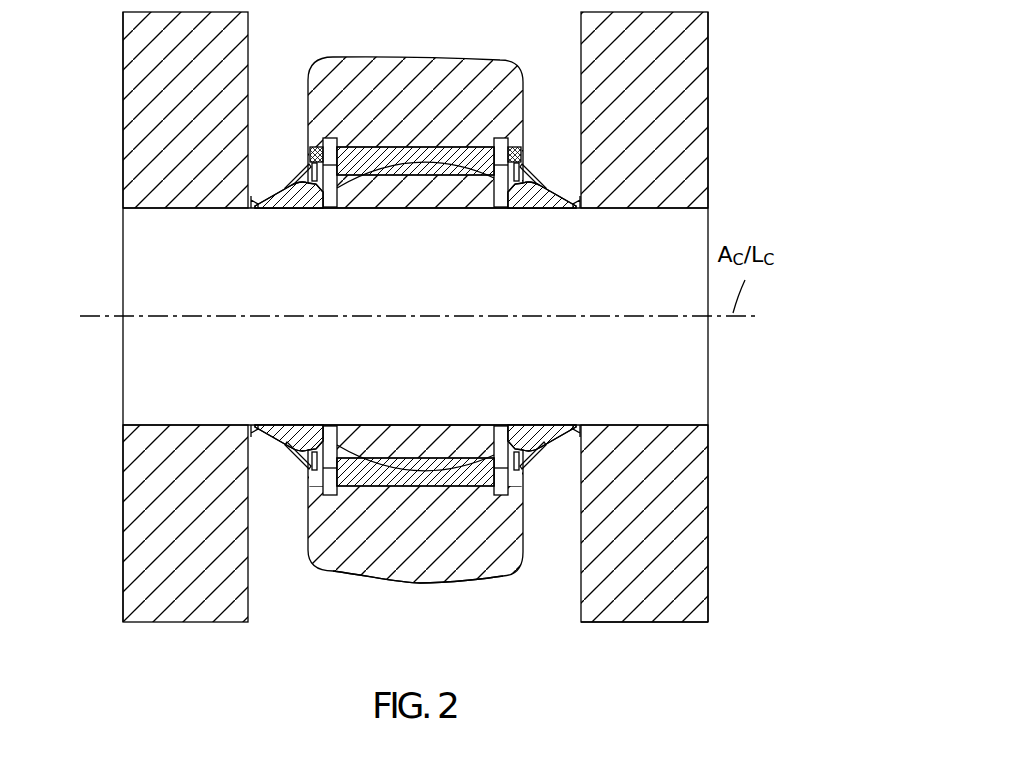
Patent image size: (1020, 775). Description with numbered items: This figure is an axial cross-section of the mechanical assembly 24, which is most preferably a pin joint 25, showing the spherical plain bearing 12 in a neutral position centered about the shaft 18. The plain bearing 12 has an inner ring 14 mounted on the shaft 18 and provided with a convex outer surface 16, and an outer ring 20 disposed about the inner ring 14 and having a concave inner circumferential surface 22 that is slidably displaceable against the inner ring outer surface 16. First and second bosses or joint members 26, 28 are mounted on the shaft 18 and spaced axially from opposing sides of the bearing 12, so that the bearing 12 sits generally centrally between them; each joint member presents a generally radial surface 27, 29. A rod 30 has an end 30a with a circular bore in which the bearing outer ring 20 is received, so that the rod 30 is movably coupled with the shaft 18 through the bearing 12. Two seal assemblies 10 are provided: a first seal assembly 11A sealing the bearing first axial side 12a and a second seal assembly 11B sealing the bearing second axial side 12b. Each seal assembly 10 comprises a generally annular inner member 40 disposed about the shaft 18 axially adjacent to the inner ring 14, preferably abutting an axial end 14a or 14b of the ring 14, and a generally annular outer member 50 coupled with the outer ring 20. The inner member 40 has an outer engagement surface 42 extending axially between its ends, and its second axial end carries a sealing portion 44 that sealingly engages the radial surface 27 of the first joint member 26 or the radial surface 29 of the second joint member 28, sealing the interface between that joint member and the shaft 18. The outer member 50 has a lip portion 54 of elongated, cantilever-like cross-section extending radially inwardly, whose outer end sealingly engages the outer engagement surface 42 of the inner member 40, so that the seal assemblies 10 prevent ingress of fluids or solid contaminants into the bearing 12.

The seal assembly 10 is at (290, 83).
The first seal assembly 11A is at (268, 232).
The second seal assembly 11B is at (562, 268).
The spherical plain bearing 12 is at (397, 125).
The bearing first axial side 12a is at (332, 212).
The bearing second axial side 12b is at (501, 212).
The inner ring 14 is at (458, 212).
The inner ring axial end 14a is at (327, 428).
The inner ring axial end 14b is at (513, 430).
The convex outer surface 16 is at (460, 465).
The shaft 18 is at (122, 255).
The outer ring 20 is at (473, 143).
The concave inner circumferential surface 22 is at (353, 451).
The mechanical assembly 24 is at (98, 401).
The pin joint 25 is at (720, 405).
The first joint member 26 is at (122, 110).
The radial surface 27 is at (250, 610).
The second joint member 28 is at (700, 539).
The radial surface 29 is at (581, 602).
The rod 30 is at (430, 592).
The rod end 30a is at (388, 572).
The inner member 40 is at (302, 212).
The outer engagement surface 42 is at (258, 436).
The sealing portion 44 is at (252, 212).
The outer member 50 is at (296, 165).
The lip portion 54 is at (283, 185).